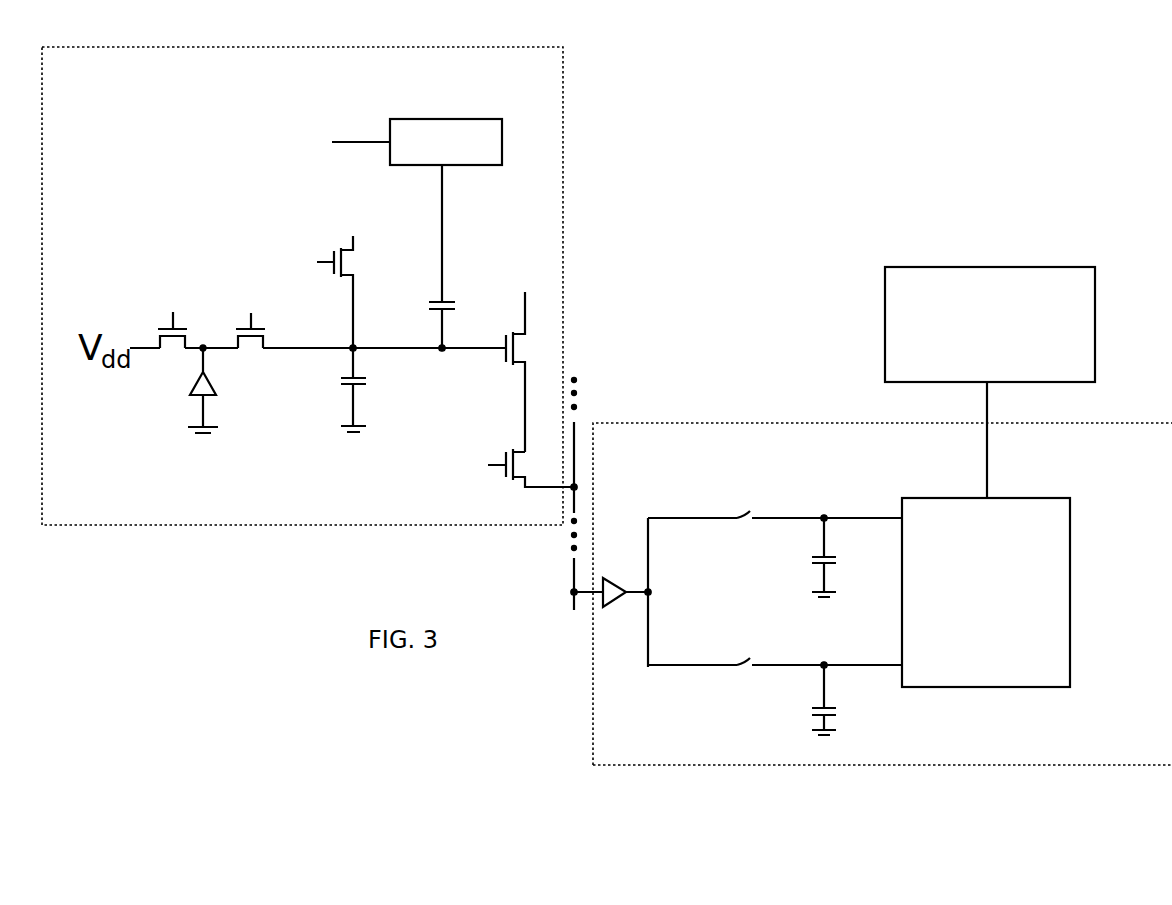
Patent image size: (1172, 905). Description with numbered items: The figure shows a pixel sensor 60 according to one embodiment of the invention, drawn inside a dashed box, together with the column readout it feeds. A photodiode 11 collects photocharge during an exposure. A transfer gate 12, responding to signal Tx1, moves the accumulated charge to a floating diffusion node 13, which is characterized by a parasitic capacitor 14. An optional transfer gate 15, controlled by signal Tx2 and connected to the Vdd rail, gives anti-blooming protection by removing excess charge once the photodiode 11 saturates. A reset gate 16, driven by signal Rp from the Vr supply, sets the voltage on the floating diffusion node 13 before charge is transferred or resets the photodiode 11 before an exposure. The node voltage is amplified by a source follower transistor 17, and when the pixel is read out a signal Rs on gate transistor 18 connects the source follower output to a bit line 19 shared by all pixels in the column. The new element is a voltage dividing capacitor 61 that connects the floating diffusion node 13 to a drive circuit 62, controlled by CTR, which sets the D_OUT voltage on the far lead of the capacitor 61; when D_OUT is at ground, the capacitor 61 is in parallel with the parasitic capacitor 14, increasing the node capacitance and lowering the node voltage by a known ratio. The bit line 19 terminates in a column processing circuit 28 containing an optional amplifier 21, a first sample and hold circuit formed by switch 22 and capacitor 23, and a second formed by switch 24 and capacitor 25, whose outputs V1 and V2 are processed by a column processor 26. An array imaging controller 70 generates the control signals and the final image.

The photodiode 11 is at (214, 386).
The transfer gate 12 is at (266, 338).
The floating diffusion node 13 is at (356, 345).
The parasitic capacitor 14 is at (366, 382).
The optional transfer gate 15 is at (187, 338).
The reset gate 16 is at (354, 261).
The source follower transistor 17 is at (518, 372).
The gate transistor 18 is at (518, 463).
The bit line 19 is at (572, 568).
The amplifier 21 is at (612, 601).
The switch 22 is at (741, 512).
The capacitor 23 is at (836, 563).
The switch 24 is at (741, 660).
The capacitor 25 is at (836, 715).
The column processor 26 is at (1000, 689).
The column processing circuit 28 is at (992, 767).
The pixel sensor 60 is at (565, 198).
The voltage dividing capacitor 61 is at (455, 310).
The drive circuit 62 is at (502, 146).
The array imaging controller 70 is at (1095, 336).